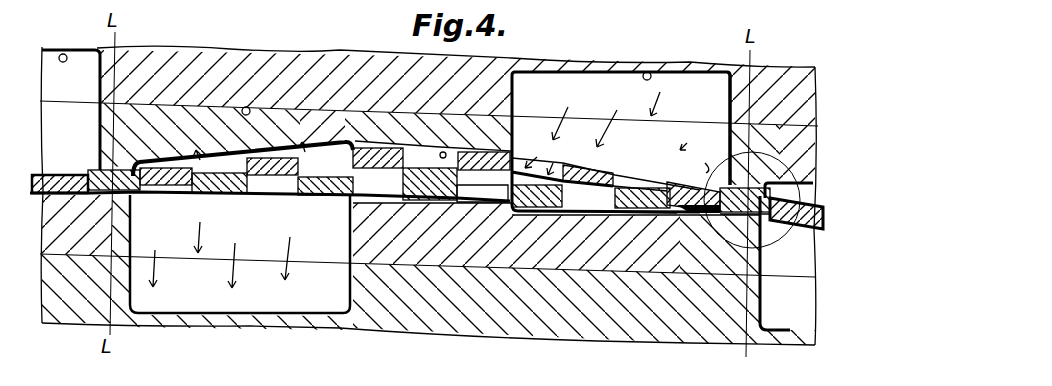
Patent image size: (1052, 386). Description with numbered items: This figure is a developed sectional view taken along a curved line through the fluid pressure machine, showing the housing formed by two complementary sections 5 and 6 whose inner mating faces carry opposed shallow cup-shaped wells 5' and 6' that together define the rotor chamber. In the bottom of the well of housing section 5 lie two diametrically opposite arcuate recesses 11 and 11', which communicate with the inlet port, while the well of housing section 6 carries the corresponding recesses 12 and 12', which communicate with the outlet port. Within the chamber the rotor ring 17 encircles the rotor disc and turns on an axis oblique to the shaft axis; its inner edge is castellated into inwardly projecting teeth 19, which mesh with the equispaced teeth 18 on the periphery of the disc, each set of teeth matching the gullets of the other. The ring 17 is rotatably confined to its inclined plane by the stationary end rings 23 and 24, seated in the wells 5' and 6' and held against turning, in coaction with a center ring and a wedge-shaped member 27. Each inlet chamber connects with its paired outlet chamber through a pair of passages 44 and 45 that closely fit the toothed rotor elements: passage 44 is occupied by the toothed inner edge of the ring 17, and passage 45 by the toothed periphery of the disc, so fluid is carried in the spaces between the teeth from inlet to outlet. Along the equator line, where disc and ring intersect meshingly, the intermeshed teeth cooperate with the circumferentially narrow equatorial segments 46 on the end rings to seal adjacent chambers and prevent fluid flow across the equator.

The housing section 5 is at (457, 101).
The cup-shaped well 5' is at (263, 66).
The stationary end ring 23 is at (321, 112).
The arcuate recess 11 is at (71, 92).
The arcuate recess 11' is at (686, 106).
The passage 44 is at (476, 112).
The equatorial segment 46 is at (119, 160).
The inwardly projecting teeth 19 is at (57, 174).
The teeth 18 is at (90, 171).
The ring 17 is at (580, 160).
The wedge-shaped member 27 is at (327, 293).
The housing section 6 is at (428, 283).
The stationary end ring 24 is at (392, 222).
The cup-shaped well 6' is at (397, 312).
The passage 45 is at (480, 203).
The arcuate recess 12' is at (240, 279).
The arcuate recess 12 is at (780, 289).